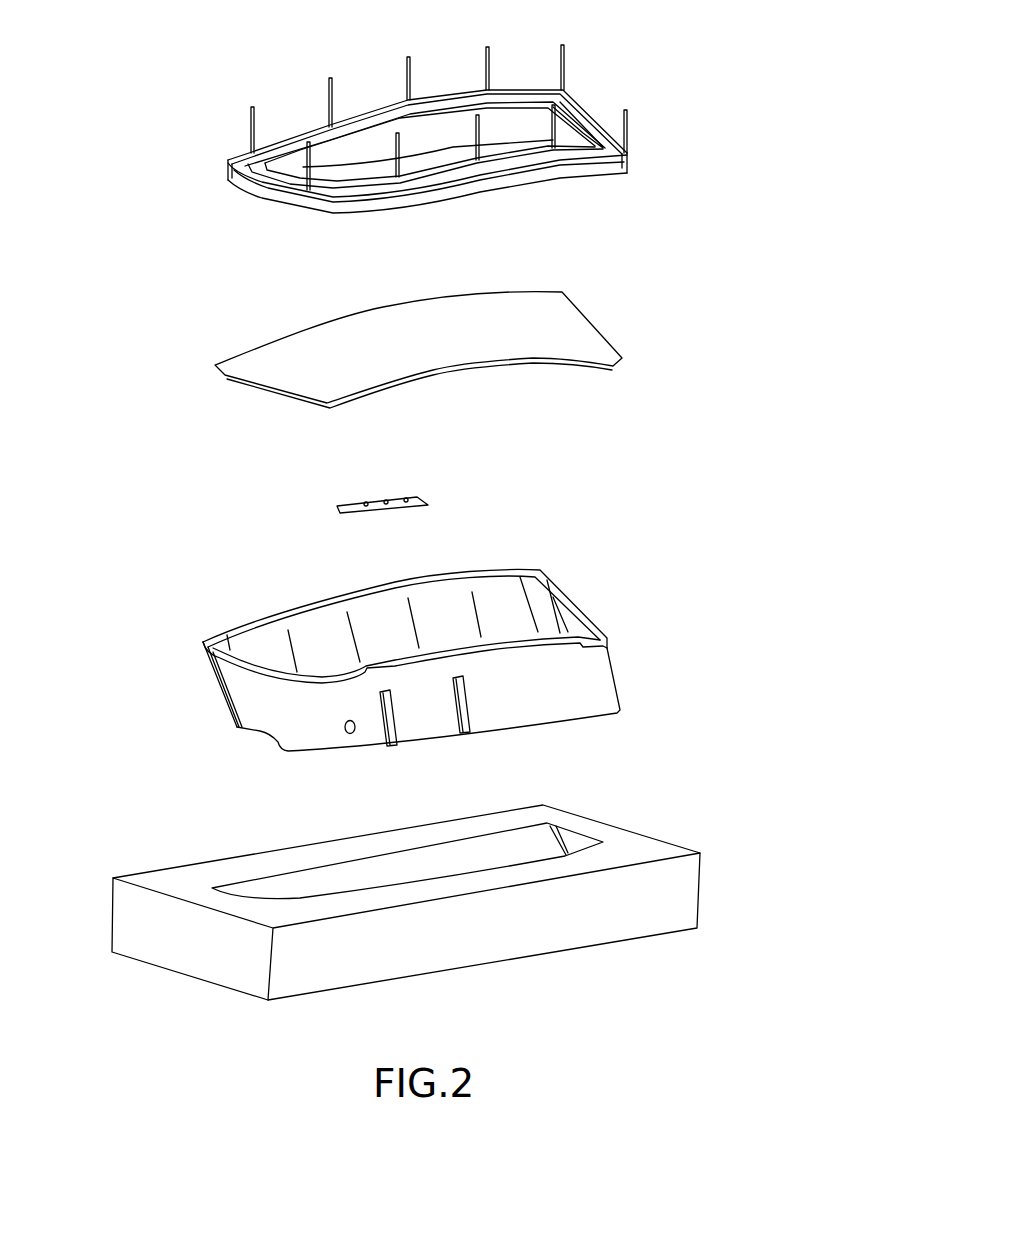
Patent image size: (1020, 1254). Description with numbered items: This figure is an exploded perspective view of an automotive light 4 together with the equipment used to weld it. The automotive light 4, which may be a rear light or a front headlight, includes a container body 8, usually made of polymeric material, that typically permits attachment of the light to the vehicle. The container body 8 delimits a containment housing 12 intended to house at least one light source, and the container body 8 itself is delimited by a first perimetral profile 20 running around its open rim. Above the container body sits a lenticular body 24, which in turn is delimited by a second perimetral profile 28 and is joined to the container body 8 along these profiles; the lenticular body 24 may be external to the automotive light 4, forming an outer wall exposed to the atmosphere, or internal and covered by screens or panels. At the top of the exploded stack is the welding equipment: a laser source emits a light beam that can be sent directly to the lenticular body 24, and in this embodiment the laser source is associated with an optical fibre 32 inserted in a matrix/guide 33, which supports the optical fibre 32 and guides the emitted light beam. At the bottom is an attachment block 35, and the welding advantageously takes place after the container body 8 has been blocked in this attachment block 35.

The automotive light 4 is at (648, 463).
The container body 8 is at (618, 700).
The containment housing 12 is at (303, 648).
The first perimetral profile 20 is at (578, 604).
The lenticular body 24 is at (283, 372).
The second perimetral profile 28 is at (277, 390).
The optical fibre 32 is at (566, 76).
The matrix/guide 33 is at (628, 167).
The attachment block 35 is at (508, 932).